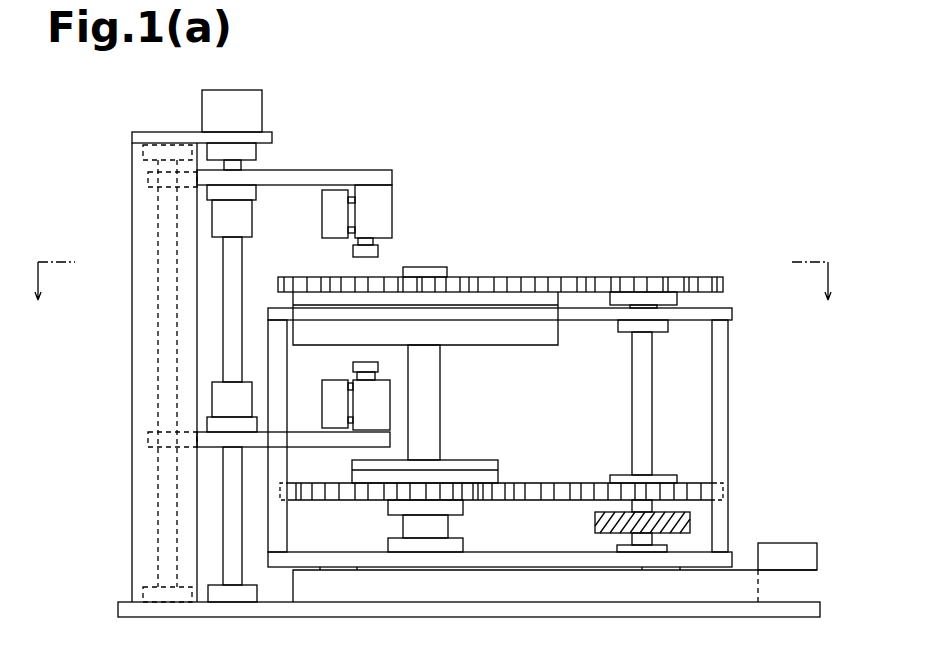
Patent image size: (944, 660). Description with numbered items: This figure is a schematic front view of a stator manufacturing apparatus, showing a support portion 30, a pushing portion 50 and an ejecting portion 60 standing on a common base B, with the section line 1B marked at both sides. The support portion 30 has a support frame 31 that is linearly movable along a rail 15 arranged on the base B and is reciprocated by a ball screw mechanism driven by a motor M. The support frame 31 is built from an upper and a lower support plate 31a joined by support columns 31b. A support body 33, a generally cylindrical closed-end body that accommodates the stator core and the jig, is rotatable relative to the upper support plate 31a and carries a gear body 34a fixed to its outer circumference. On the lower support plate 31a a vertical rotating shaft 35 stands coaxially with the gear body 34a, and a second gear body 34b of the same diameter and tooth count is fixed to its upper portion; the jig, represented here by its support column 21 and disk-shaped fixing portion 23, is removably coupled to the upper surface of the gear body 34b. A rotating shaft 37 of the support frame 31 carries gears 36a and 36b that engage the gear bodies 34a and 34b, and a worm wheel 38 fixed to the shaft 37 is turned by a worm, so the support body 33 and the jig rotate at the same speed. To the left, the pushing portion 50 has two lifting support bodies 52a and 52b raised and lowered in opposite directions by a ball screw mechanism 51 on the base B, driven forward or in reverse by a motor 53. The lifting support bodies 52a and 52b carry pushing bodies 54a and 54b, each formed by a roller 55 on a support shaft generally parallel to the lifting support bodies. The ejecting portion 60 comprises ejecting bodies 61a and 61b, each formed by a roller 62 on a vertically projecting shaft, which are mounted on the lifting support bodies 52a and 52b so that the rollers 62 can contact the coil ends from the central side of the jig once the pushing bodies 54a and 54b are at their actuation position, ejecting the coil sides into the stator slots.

The rail 15 is at (737, 594).
The support column 21 is at (428, 425).
The fixing portion 23 is at (500, 465).
The support portion 30 is at (760, 421).
The support frame 31 is at (735, 303).
The support plate 31a is at (732, 316).
The support column 31b is at (728, 352).
The support body 33 is at (547, 340).
The gear body 34a is at (528, 277).
The gear body 34b is at (508, 490).
The rotating shaft 35 is at (442, 530).
The gear 36a is at (657, 274).
The gear 36b is at (693, 482).
The rotating shaft 37 is at (645, 386).
The worm wheel 38 is at (610, 510).
The pushing portion 50 is at (377, 134).
The ball screw mechanism 51 is at (263, 267).
The lifting support body 52a is at (302, 180).
The lifting support body 52b is at (383, 438).
The motor 53 is at (208, 113).
The pushing body 54a is at (316, 228).
The pushing body 54b is at (313, 413).
The roller 55 is at (337, 230).
The ejecting portion 60 is at (465, 205).
The ejecting body 61a is at (385, 246).
The ejecting body 61b is at (380, 374).
The roller 62 is at (367, 255).
The section line 1B is at (432, 296).
The base B is at (817, 612).
The motor M is at (803, 548).